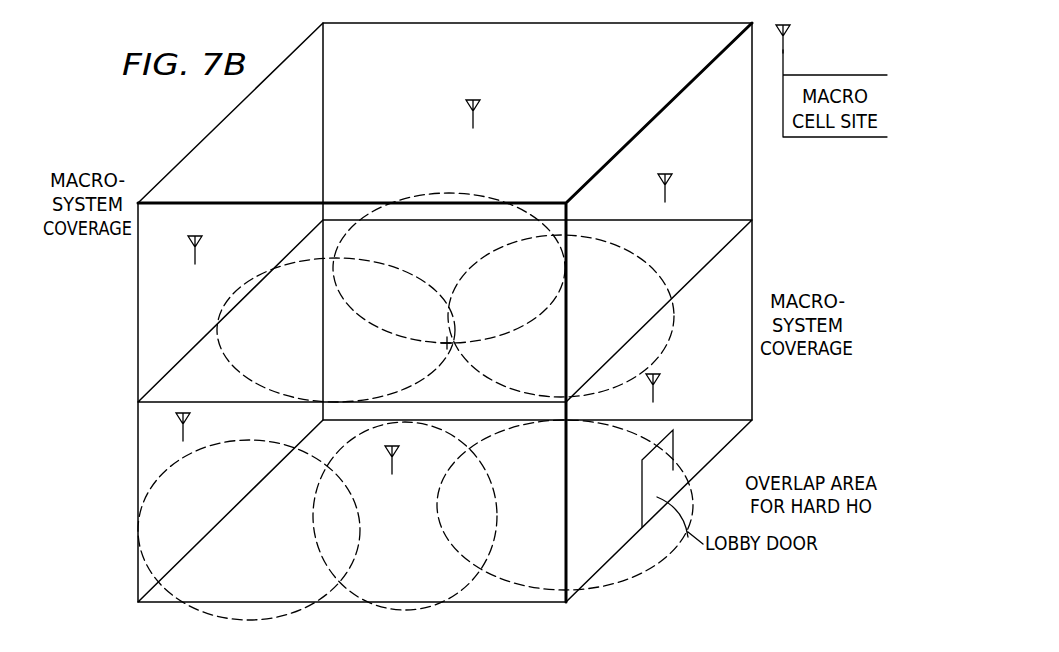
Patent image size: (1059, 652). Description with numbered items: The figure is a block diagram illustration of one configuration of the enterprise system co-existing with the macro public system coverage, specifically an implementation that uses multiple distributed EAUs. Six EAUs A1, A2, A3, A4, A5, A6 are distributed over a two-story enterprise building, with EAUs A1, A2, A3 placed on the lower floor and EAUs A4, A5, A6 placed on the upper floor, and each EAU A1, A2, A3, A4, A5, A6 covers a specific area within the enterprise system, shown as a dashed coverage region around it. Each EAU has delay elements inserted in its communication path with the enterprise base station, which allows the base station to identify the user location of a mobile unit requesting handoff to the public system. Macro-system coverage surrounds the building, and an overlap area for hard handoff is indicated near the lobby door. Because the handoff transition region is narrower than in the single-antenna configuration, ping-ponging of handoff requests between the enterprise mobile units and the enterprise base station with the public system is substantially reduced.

The EAU A1 is at (327, 466).
The EAU A2 is at (358, 596).
The EAU A3 is at (565, 420).
The EAU A4 is at (333, 258).
The EAU A5 is at (541, 218).
The EAU A6 is at (577, 220).